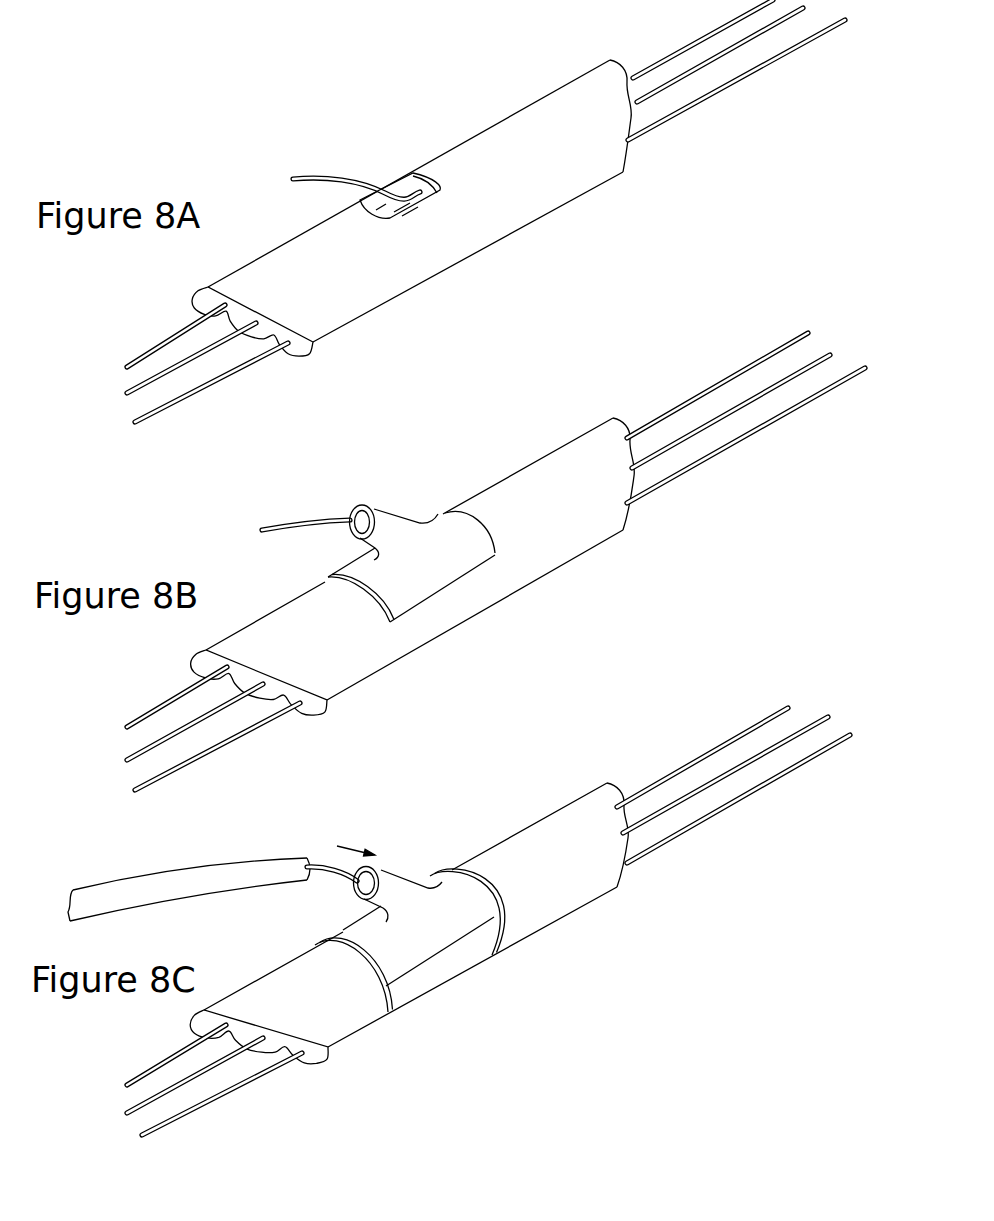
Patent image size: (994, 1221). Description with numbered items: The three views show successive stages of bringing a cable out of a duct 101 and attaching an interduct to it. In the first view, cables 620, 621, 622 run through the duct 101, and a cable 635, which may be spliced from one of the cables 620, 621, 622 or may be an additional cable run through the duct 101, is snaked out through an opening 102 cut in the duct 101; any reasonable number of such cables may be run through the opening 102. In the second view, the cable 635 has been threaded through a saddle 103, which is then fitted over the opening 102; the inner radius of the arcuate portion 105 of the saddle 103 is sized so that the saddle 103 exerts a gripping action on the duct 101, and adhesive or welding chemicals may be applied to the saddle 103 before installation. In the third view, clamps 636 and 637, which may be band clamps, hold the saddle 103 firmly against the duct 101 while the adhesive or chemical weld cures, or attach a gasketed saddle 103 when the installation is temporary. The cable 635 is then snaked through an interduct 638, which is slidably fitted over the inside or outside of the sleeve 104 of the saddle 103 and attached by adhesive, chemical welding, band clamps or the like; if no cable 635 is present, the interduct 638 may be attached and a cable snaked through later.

In FIG. 8C, the duct 101 is at (588, 893).
In FIG. 8A, the opening 102 is at (402, 180).
In FIG. 8B, the saddle 103 is at (438, 513).
In FIG. 8C, the saddle 103 is at (423, 873).
In FIG. 8C, the sleeve 104 is at (393, 867).
In FIG. 8B, the arcuate portion 105 is at (496, 554).
In FIG. 8A, the cable 620 is at (127, 367).
In FIG. 8B, the cable 620 is at (140, 717).
In FIG. 8C, the cable 620 is at (137, 1078).
In FIG. 8A, the cable 621 is at (133, 385).
In FIG. 8B, the cable 621 is at (130, 752).
In FIG. 8C, the cable 621 is at (137, 1107).
In FIG. 8A, the cable 622 is at (138, 413).
In FIG. 8B, the cable 622 is at (140, 777).
In FIG. 8C, the cable 622 is at (145, 1125).
In FIG. 8A, the cable 635 is at (317, 175).
In FIG. 8B, the cable 635 is at (308, 517).
In FIG. 8C, the cable 635 is at (327, 868).
In FIG. 8C, the clamp 636 is at (393, 1013).
In FIG. 8C, the clamp 637 is at (495, 953).
In FIG. 8C, the interduct 638 is at (138, 890).